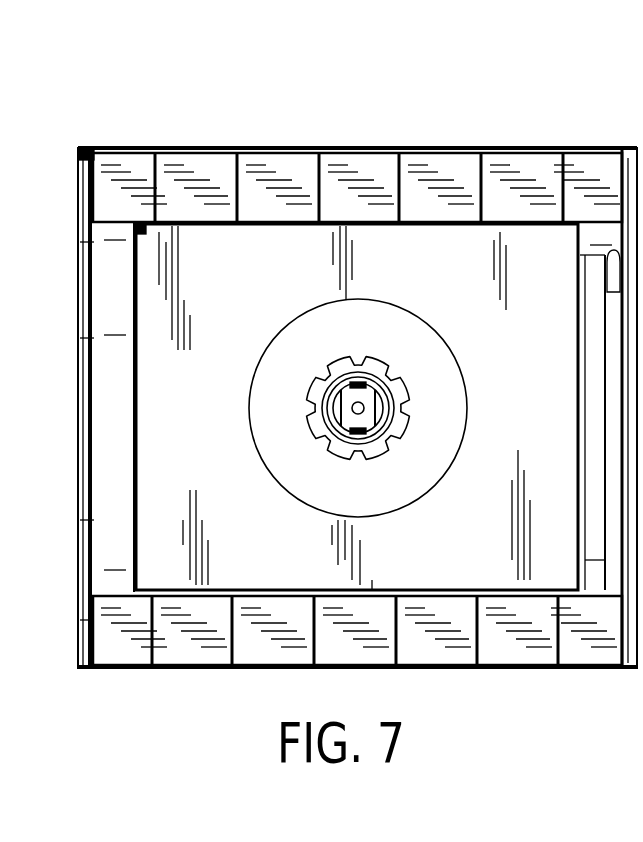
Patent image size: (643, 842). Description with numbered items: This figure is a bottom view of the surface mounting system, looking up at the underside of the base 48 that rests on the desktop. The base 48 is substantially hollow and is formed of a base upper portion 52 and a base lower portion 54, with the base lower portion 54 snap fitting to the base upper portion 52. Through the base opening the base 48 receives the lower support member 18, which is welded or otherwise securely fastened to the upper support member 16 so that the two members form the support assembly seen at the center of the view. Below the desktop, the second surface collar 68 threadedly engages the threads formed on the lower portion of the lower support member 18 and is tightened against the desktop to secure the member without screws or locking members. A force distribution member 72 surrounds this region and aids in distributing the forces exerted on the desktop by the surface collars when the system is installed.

The base upper portion 52 is at (83, 150).
The base 48 is at (134, 185).
The base lower portion 54 is at (431, 185).
The force distribution member 72 is at (430, 460).
The second surface collar 68 is at (410, 427).
The upper support member 16 is at (312, 383).
The lower support member 18 is at (313, 435).